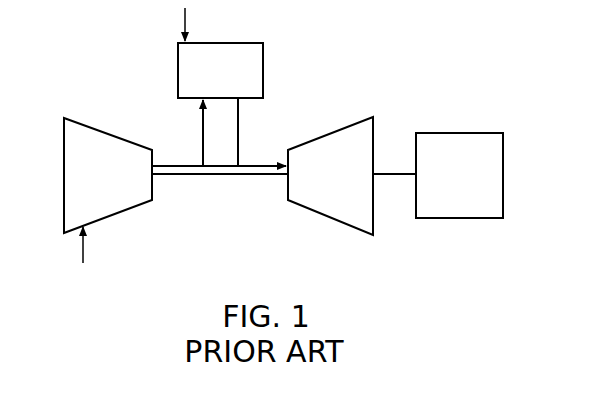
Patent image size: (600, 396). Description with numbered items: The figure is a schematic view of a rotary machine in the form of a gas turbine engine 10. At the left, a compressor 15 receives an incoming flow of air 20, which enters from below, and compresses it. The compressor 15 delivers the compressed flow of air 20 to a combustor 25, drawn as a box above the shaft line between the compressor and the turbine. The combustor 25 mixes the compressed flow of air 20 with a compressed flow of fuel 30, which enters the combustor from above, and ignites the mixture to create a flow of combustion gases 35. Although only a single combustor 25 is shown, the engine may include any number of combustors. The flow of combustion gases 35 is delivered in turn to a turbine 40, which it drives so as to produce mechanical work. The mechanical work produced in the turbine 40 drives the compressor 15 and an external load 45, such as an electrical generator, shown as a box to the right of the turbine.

The gas turbine engine 10 is at (380, 46).
The compressor 15 is at (94, 185).
The flow of air 20 is at (86, 247).
The combustor 25 is at (209, 83).
The flow of fuel 30 is at (188, 22).
The flow of combustion gases 35 is at (268, 163).
The turbine 40 is at (321, 185).
The external load 45 is at (448, 186).